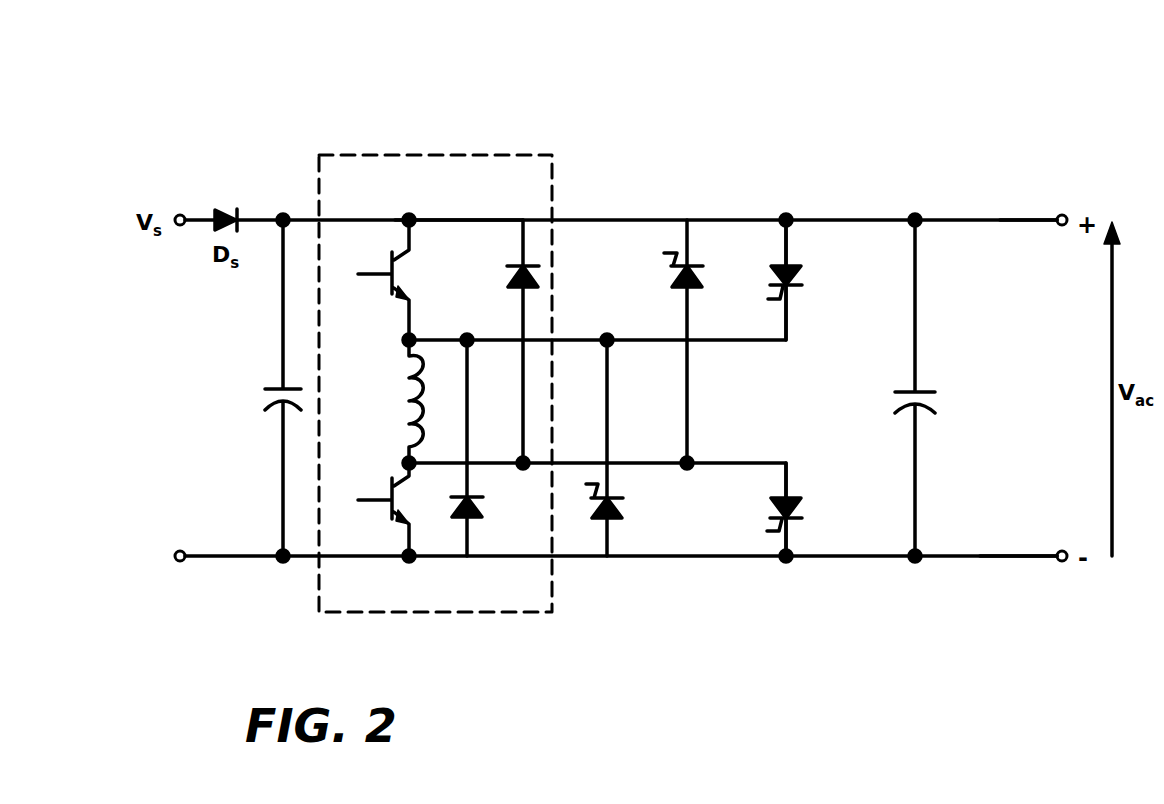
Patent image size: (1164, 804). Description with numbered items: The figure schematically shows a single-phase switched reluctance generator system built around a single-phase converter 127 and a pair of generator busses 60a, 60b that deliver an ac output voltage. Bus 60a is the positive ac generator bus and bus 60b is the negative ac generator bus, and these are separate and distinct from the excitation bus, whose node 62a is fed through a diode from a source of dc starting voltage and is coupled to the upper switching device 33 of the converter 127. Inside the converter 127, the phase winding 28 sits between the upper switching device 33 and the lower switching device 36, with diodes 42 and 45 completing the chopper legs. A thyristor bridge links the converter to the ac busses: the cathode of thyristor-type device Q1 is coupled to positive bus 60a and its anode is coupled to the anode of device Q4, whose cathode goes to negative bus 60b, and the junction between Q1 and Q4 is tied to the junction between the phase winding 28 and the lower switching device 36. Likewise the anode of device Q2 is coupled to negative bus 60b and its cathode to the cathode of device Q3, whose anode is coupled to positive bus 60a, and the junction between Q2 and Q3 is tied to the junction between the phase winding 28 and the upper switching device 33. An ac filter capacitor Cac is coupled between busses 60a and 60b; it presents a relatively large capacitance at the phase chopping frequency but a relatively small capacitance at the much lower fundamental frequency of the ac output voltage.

The single-phase converter 127 is at (528, 156).
The upper switching device 33 is at (385, 254).
The lower switching device 36 is at (386, 480).
The phase winding 28 is at (409, 404).
The upper diode 42 is at (512, 289).
The lower diode 45 is at (478, 512).
The positive supply node 62a is at (444, 218).
The thyristor-type device Q1 is at (696, 279).
The thyristor-type device Q2 is at (615, 508).
The thyristor-type device Q3 is at (797, 278).
The thyristor-type device Q4 is at (797, 510).
The ac filter capacitor Cac is at (894, 388).
The positive ac generator bus 60a is at (1047, 218).
The negative ac generator bus 60b is at (1005, 560).